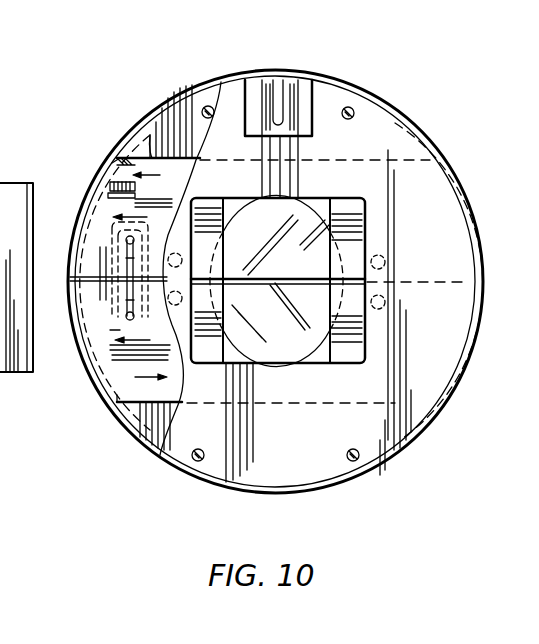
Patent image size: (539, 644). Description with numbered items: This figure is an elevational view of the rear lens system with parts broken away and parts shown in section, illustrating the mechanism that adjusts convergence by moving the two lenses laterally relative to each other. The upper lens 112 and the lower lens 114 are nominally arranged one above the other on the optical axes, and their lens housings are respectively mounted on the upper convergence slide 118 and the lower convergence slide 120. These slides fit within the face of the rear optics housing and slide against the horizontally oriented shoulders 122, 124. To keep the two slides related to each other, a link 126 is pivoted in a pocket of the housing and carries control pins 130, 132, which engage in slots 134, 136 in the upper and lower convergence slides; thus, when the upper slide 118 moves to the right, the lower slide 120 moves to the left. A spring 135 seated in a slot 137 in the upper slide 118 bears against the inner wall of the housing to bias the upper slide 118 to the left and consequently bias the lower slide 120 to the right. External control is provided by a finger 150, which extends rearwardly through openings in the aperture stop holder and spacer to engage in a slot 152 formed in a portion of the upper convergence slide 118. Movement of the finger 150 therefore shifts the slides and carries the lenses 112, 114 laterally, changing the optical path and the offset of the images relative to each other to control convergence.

The upper lens 112 is at (297, 218).
The lower lens 114 is at (287, 350).
The upper convergence slide 118 is at (178, 163).
The lower convergence slide 120 is at (143, 392).
The horizontally oriented shoulder 122 is at (113, 398).
The horizontally oriented shoulder 124 is at (118, 160).
The link 126 is at (100, 299).
The control pin 130 is at (126, 238).
The control pin 132 is at (122, 344).
The slot 134 is at (126, 260).
The spring 135 is at (112, 184).
The slot 136 is at (126, 312).
The slot 137 is at (143, 182).
The finger 150 is at (283, 112).
The slot 152 is at (278, 106).